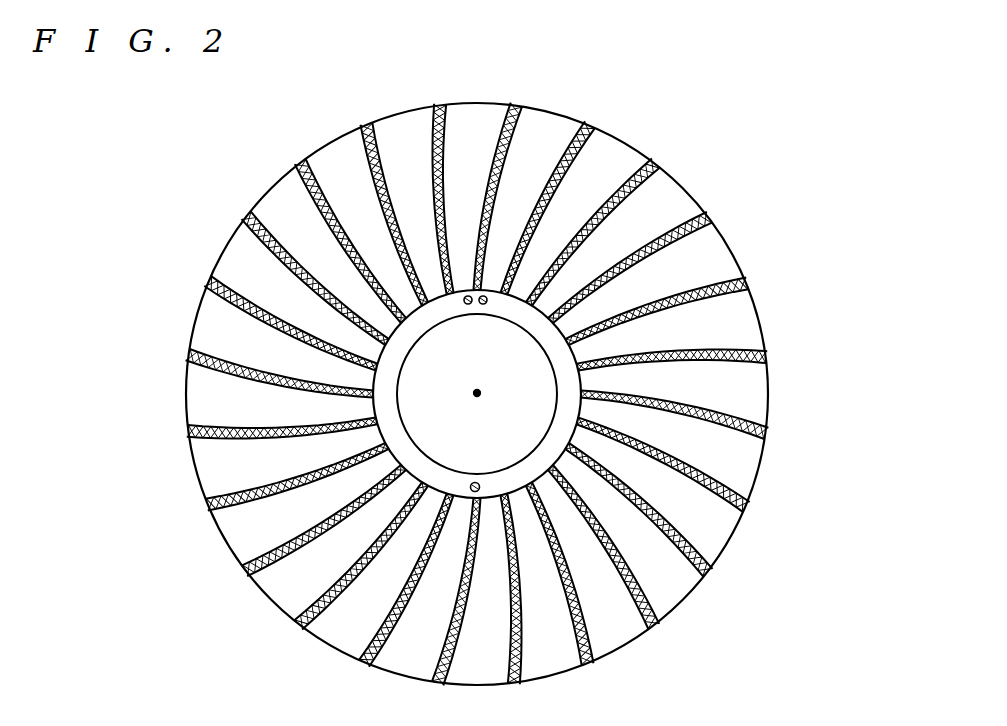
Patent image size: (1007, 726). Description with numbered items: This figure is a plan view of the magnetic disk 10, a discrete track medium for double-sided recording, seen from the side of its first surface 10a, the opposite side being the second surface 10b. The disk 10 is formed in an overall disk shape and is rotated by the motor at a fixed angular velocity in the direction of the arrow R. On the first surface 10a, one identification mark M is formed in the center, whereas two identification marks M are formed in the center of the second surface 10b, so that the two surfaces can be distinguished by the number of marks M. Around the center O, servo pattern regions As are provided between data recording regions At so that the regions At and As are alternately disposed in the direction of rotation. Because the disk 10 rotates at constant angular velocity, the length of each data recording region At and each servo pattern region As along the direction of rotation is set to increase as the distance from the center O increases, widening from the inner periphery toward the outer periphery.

The magnetic disk 10 is at (417, 92).
The first surface 10a is at (282, 298).
The second surface 10b is at (278, 453).
The center O is at (477, 389).
The identification mark M is at (468, 305).
The arrow indicating direction of rotation R is at (799, 400).
The servo pattern region As is at (731, 408).
The data recording region At is at (722, 453).